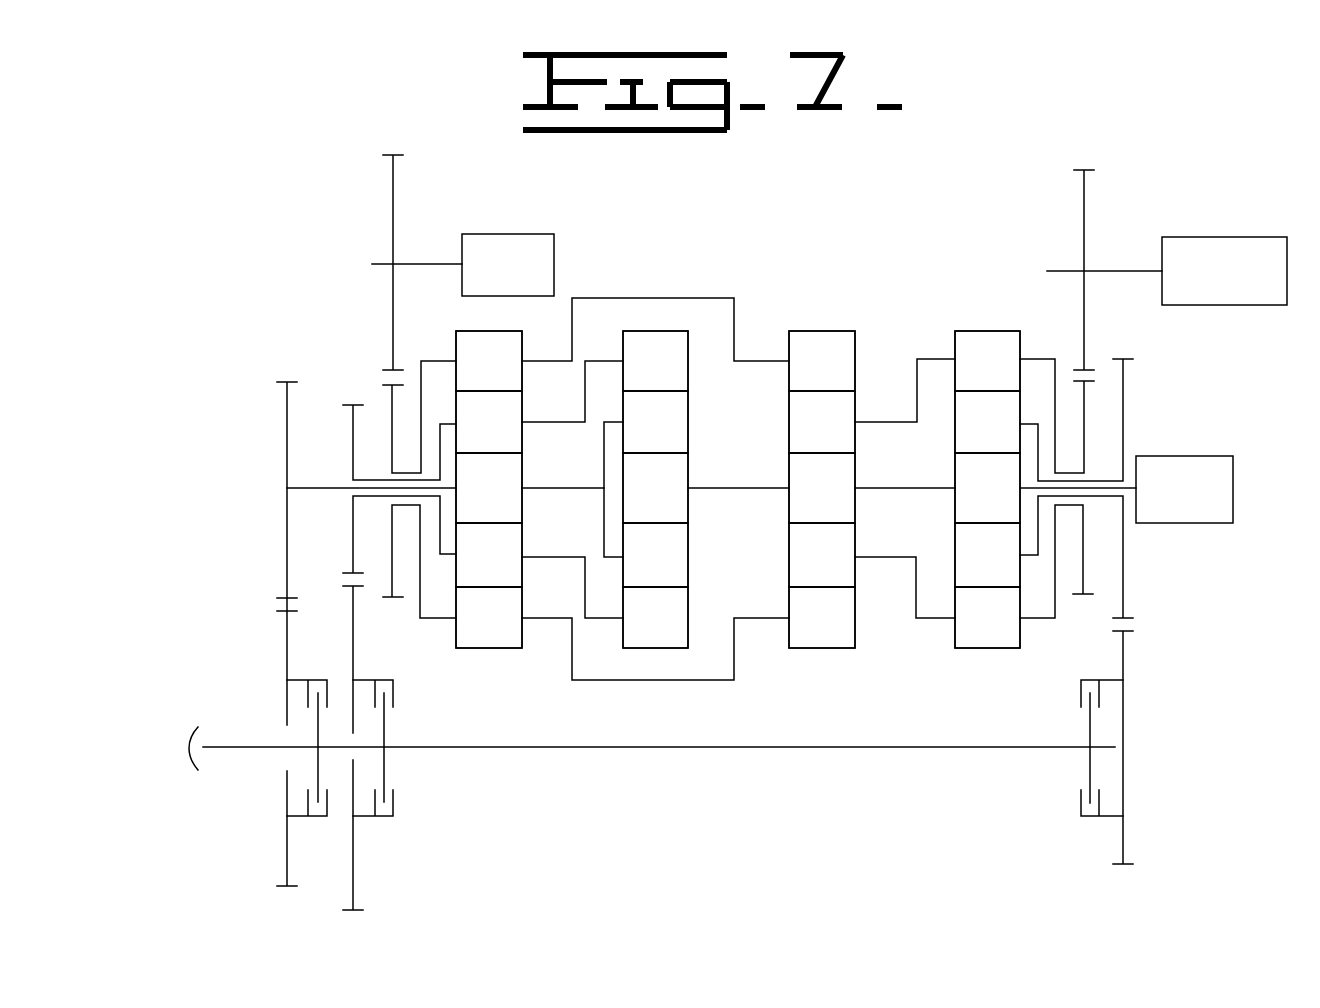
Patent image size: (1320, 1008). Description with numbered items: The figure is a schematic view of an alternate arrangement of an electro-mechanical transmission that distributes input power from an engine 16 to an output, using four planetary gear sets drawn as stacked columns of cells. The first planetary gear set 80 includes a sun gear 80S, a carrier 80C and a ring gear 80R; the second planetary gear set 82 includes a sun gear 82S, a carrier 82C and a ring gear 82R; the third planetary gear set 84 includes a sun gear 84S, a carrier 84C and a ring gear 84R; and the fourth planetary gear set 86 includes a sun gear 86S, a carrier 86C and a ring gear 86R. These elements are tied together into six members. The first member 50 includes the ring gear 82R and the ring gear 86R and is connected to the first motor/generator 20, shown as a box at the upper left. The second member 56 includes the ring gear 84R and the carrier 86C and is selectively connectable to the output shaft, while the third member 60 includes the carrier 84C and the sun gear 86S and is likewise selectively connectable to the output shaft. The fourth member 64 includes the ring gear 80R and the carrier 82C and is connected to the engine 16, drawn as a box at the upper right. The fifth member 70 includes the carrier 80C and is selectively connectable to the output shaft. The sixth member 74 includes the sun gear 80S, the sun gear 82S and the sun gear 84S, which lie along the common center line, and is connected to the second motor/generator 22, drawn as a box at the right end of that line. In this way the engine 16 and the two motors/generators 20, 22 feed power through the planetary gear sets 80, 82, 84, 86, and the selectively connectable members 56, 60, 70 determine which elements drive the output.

The engine 16 is at (1252, 237).
The first motor/generator 20 is at (554, 234).
The second motor/generator 22 is at (1218, 456).
The first member 50 is at (455, 358).
The second member 56 is at (372, 478).
The third member 60 is at (345, 497).
The fourth member 64 is at (1040, 359).
The fifth member 70 is at (1098, 497).
The sixth member 74 is at (1128, 497).
The first planetary gear set 80 is at (940, 537).
The sun gear 80S is at (955, 482).
The carrier 80C is at (955, 565).
The ring gear 80R is at (955, 645).
The second planetary gear set 82 is at (829, 537).
The sun gear 82S is at (855, 497).
The carrier 82C is at (855, 548).
The ring gear 82R is at (789, 643).
The third planetary gear set 84 is at (689, 534).
The sun gear 84S is at (688, 482).
The carrier 84C is at (688, 556).
The ring gear 84R is at (656, 650).
The fourth planetary gear set 86 is at (582, 518).
The sun gear 86S is at (522, 480).
The carrier 86C is at (522, 553).
The ring gear 86R is at (456, 635).